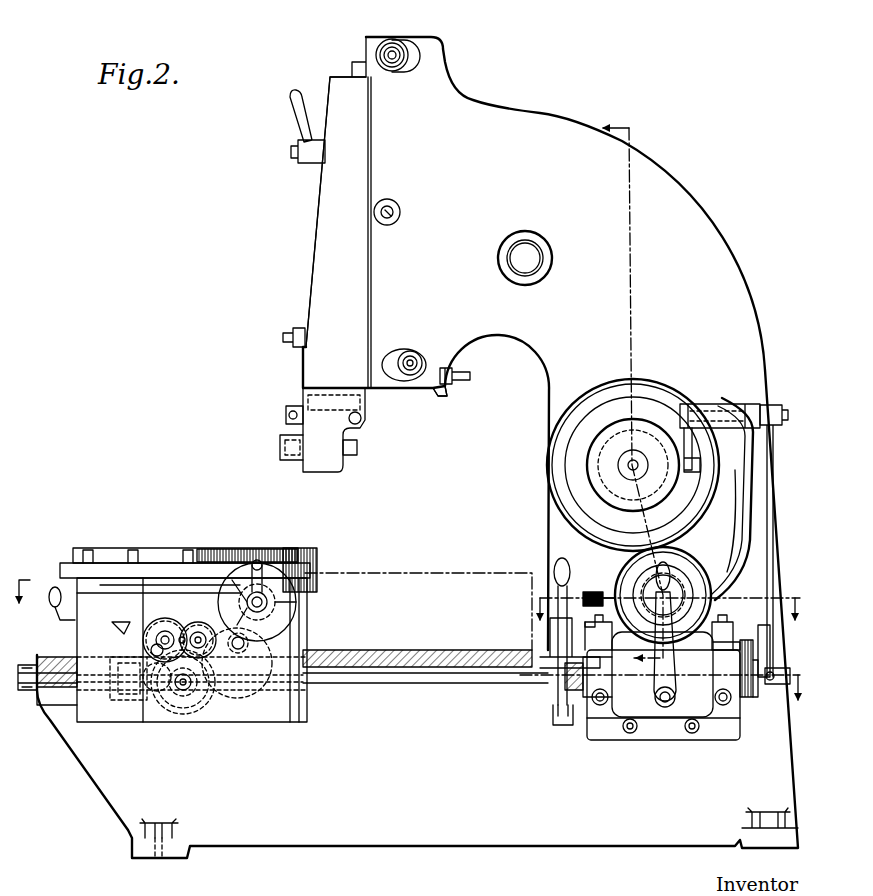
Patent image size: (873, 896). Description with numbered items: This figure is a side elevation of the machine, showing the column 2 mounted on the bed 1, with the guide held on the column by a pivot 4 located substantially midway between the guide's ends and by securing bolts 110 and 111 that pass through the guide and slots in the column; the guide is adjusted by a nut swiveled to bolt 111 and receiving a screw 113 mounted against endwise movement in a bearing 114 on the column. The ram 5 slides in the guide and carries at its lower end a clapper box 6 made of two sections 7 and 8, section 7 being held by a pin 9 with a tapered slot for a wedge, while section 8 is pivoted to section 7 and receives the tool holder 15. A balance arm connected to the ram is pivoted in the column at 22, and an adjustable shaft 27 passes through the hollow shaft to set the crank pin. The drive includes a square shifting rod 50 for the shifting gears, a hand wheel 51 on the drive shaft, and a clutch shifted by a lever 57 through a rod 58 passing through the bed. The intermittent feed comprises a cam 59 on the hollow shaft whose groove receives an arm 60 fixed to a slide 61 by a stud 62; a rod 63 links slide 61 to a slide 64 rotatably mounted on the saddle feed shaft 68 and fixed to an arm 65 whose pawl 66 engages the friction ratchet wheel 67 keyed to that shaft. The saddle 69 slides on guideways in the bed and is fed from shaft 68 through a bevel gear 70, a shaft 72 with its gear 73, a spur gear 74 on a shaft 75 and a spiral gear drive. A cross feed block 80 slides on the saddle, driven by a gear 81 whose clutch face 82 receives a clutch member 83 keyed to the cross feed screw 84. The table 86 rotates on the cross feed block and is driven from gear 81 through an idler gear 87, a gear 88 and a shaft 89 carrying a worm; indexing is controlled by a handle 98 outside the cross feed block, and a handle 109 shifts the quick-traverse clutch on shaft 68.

The bed 1 is at (313, 846).
The column 2 is at (702, 227).
The pivot 4 is at (400, 211).
The ram 5 is at (318, 288).
The clapper box 6 is at (362, 428).
The section 7 is at (364, 410).
The section 8 is at (345, 462).
The pin 9 is at (668, 620).
The tool holder 15 is at (292, 464).
The pivot 22 is at (527, 272).
The adjustable shaft 27 is at (631, 470).
The shifting rod 50 is at (616, 595).
The hand wheel 51 is at (688, 560).
The lever 57 is at (560, 566).
The rod 58 is at (566, 722).
The cam 59 is at (678, 482).
The arm 60 is at (694, 460).
The slide 61 is at (768, 404).
The stud 62 is at (715, 404).
The rod 63 is at (750, 512).
The slide 64 is at (764, 686).
The arm 65 is at (748, 640).
The pawl 66 is at (730, 646).
The friction ratchet wheel 67 is at (754, 706).
The saddle feed shaft 68 is at (446, 686).
The saddle 69 is at (303, 646).
The bevel gear 70 is at (150, 690).
The shaft 72 is at (183, 714).
The gear 73 is at (175, 715).
The spur gear 74 is at (163, 630).
The shaft 75 is at (152, 649).
The cross feed block 80 is at (307, 626).
The gear 81 is at (190, 632).
The clutch face 82 is at (200, 630).
The clutch member 83 is at (205, 648).
The cross feed screw 84 is at (178, 659).
The table 86 is at (318, 572).
The idler gear 87 is at (245, 668).
The gear 88 is at (300, 593).
The shaft 89 is at (260, 600).
The handle 98 is at (60, 620).
The handle 109 is at (662, 696).
The securing bolt 110 is at (396, 46).
The securing bolt 111 is at (430, 347).
The screw 113 is at (470, 376).
The bearing 114 is at (445, 392).